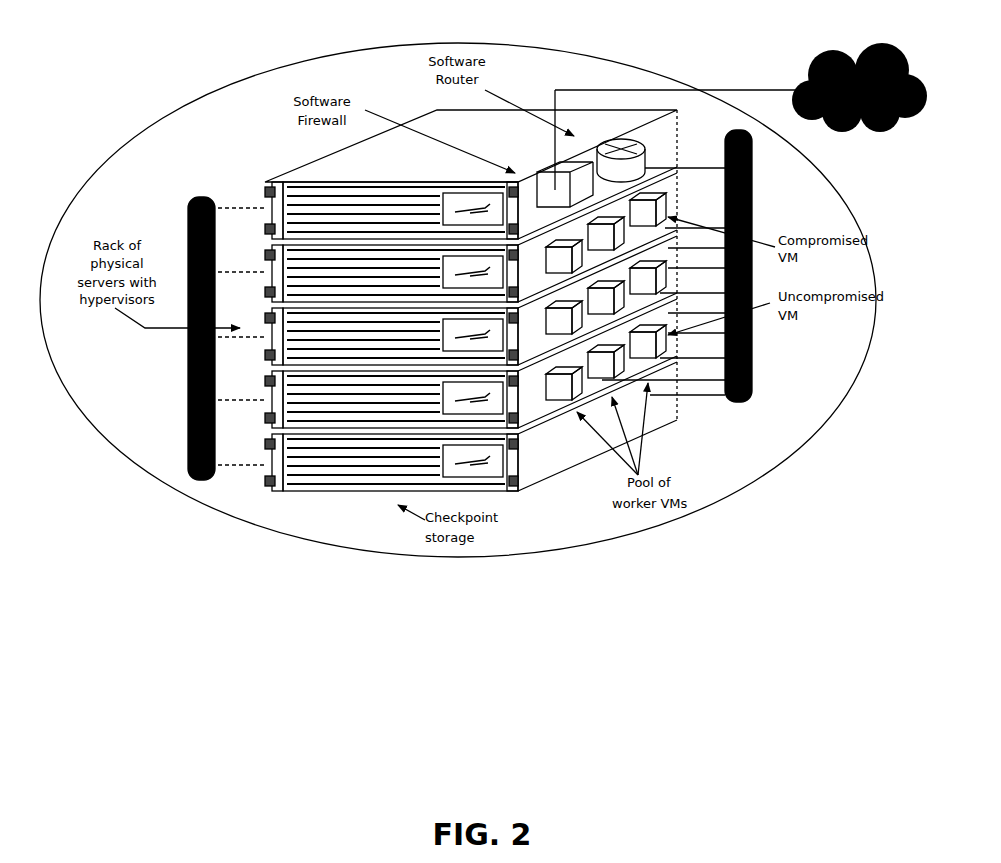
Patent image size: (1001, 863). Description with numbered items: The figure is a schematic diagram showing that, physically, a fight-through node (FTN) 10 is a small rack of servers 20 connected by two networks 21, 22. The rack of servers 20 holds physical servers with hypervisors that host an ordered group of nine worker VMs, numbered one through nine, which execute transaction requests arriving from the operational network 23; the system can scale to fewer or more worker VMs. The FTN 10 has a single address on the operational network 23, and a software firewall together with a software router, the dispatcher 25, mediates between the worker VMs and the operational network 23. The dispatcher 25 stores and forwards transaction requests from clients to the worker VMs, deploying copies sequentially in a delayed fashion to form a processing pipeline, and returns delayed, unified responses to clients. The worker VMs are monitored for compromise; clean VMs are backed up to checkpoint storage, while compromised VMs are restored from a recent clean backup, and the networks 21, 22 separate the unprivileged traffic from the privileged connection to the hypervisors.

The FTN 10 is at (343, 47).
The rack of servers 20 is at (675, 148).
The network 21 is at (755, 172).
The network 22 is at (205, 196).
The operational network 23 is at (840, 52).
The dispatcher 25 is at (640, 146).